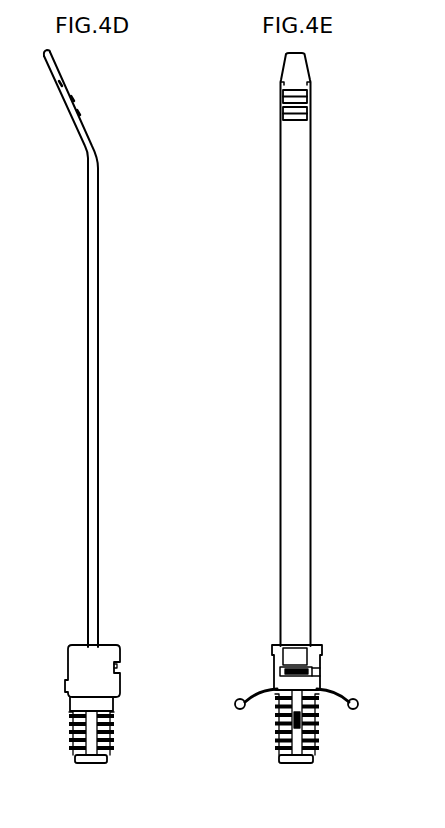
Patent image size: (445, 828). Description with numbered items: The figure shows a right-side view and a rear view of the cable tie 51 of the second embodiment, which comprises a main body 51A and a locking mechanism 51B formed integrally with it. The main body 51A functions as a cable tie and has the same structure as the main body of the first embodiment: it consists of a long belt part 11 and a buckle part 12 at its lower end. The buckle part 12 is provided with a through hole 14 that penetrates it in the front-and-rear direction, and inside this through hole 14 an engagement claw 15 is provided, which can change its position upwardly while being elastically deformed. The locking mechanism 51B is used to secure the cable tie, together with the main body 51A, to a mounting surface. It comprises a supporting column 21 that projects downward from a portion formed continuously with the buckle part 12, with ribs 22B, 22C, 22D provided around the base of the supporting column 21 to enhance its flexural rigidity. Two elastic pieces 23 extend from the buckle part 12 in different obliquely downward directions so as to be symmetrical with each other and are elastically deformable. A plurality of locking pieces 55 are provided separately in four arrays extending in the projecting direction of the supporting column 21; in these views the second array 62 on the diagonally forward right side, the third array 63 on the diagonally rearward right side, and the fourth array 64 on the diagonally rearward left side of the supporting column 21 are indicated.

In FIG. 4D, the cable tie 51 is at (117, 86).
In FIG. 4E, the cable tie 51 is at (239, 91).
In FIG. 4D, the main body 51A is at (107, 242).
In FIG. 4E, the main body 51A is at (323, 241).
In FIG. 4D, the locking mechanism 51B is at (135, 617).
In FIG. 4E, the locking mechanism 51B is at (338, 617).
In FIG. 4D, the belt part 11 is at (88, 194).
In FIG. 4E, the belt part 11 is at (281, 195).
In FIG. 4D, the buckle part 12 is at (68, 654).
In FIG. 4E, the buckle part 12 is at (322, 646).
In FIG. 4E, the through hole 14 is at (283, 670).
In FIG. 4D, the engagement claw 15 is at (120, 652).
In FIG. 4E, the engagement claw 15 is at (319, 672).
In FIG. 4D, the supporting column 21 is at (92, 763).
In FIG. 4E, the supporting column 21 is at (297, 763).
In FIG. 4E, the rib 22B is at (275, 696).
In FIG. 4E, the rib 22C is at (294, 727).
In FIG. 4E, the rib 22D is at (318, 697).
In FIG. 4D, the elastic piece 23 is at (108, 705).
In FIG. 4E, the elastic piece 23 is at (240, 702).
In FIG. 4D, the locking piece 55 is at (68, 730).
In FIG. 4E, the locking piece 55 is at (272, 738).
In FIG. 4D, the second array 62 is at (67, 765).
In FIG. 4D, the third array 63 is at (130, 756).
In FIG. 4E, the third array 63 is at (266, 769).
In FIG. 4E, the fourth array 64 is at (332, 764).